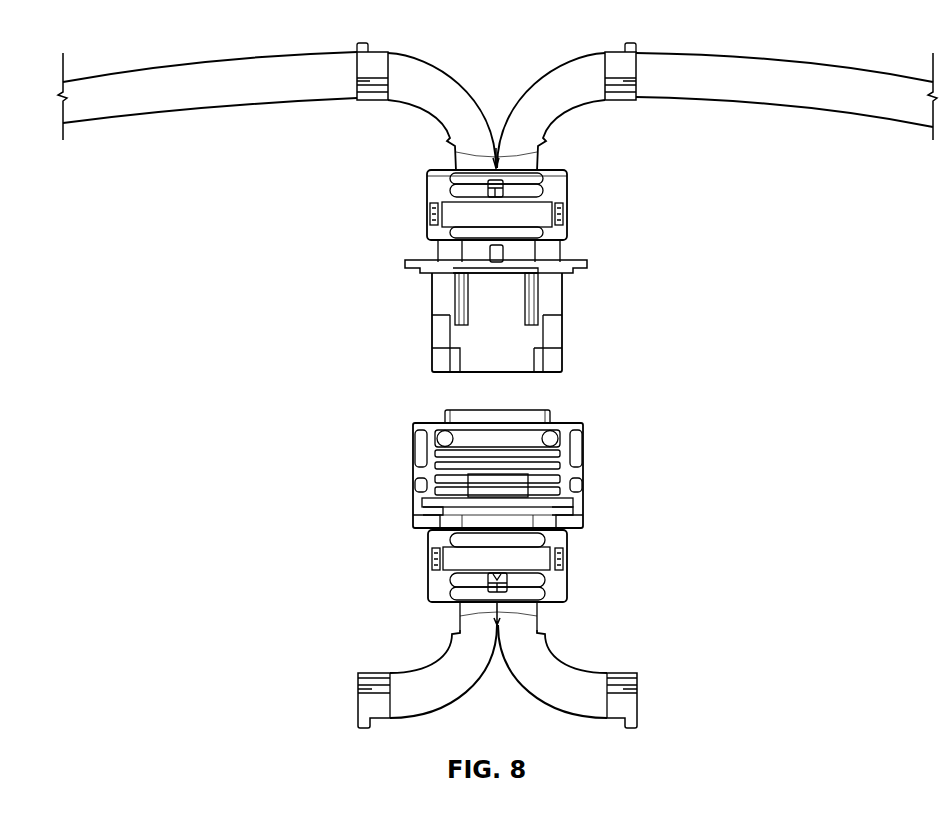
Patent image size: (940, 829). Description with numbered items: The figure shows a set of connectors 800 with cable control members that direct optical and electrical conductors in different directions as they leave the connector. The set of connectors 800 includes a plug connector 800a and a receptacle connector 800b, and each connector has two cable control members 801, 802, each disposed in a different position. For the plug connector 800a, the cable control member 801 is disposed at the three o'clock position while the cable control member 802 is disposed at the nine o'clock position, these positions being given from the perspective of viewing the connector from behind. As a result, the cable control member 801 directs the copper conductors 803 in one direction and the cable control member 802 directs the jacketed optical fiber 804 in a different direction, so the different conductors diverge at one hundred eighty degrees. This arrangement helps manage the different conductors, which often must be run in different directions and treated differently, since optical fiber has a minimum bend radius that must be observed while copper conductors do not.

The set of connectors 800 is at (238, 298).
The plug connector 800a is at (606, 244).
The receptacle connector 800b is at (592, 478).
The cable control member 801 is at (415, 63).
The cable control member 802 is at (579, 63).
The copper conductors 803 is at (196, 56).
The jacketed optical fiber 804 is at (722, 57).